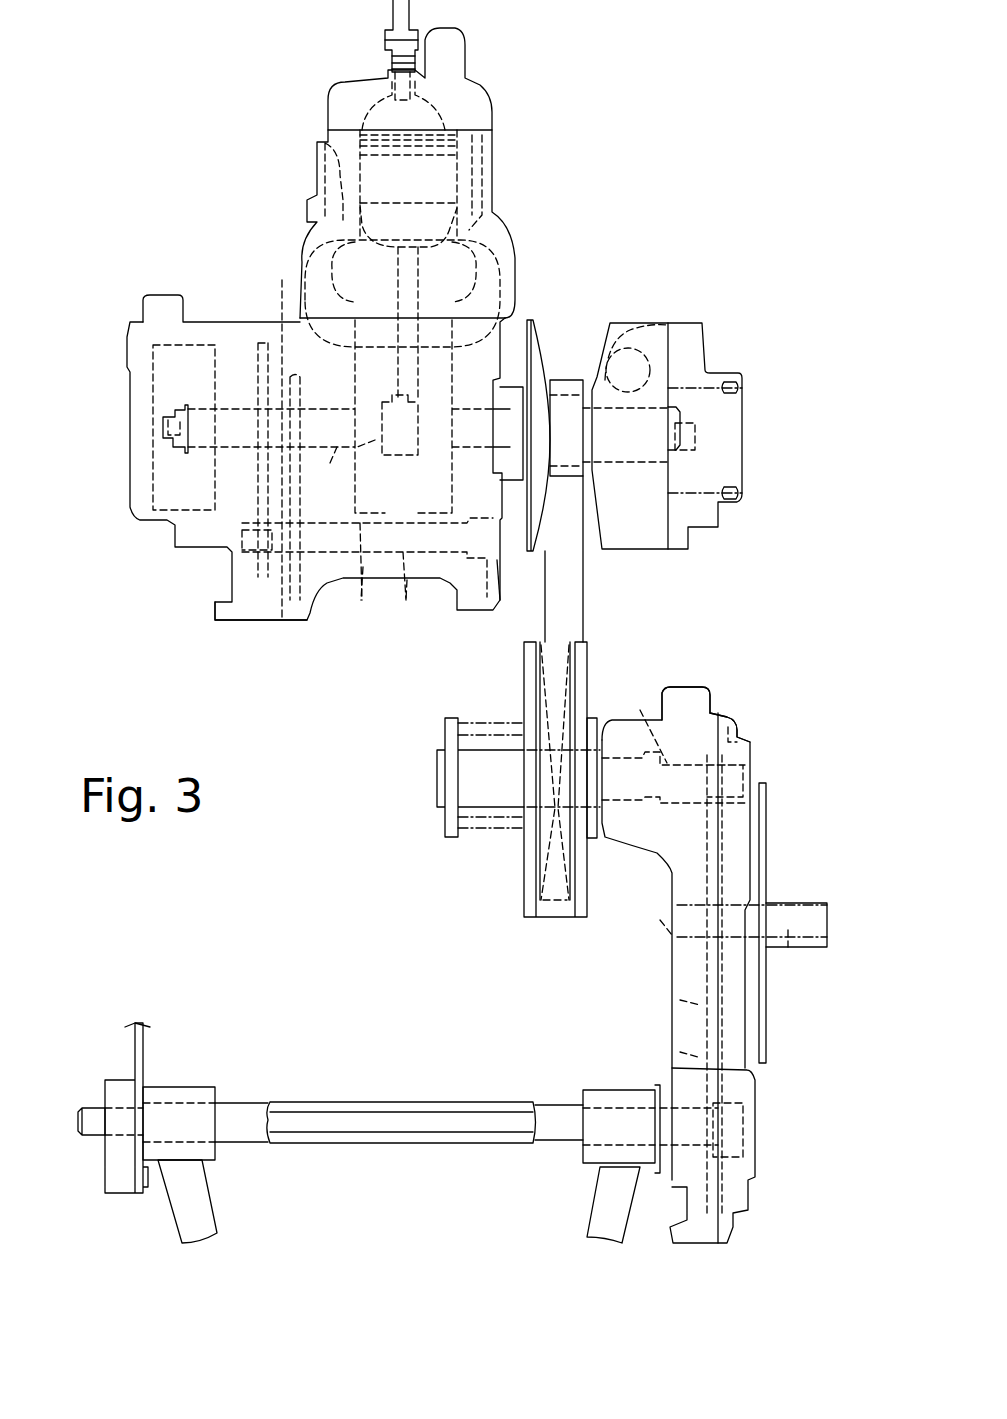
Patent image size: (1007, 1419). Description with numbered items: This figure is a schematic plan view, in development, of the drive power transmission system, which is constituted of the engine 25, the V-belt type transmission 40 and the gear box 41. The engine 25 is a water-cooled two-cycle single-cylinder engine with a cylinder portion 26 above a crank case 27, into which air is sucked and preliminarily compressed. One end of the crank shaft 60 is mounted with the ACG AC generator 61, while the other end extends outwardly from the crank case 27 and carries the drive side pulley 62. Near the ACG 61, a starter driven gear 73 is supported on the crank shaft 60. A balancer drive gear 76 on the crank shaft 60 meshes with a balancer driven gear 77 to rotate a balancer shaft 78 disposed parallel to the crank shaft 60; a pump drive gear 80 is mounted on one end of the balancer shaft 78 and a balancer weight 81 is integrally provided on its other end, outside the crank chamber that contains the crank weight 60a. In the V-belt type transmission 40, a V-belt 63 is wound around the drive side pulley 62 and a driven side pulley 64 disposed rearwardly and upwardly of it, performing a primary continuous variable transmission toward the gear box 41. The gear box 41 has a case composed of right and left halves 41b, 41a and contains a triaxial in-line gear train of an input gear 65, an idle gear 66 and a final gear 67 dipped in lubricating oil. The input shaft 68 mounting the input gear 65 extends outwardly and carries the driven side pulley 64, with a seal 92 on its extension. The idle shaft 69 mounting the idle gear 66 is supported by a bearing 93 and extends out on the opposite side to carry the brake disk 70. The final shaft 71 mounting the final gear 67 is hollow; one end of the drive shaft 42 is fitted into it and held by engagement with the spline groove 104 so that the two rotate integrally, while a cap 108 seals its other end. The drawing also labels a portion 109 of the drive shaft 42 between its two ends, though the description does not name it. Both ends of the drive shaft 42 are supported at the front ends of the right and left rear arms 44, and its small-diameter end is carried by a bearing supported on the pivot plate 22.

The engine 25 is at (242, 177).
The cylinder portion 26 is at (333, 135).
The starter driven gear 73 is at (237, 335).
The crank case 27 is at (263, 327).
The balancer drive gear 76 is at (274, 440).
The drive side pulley 62 is at (540, 340).
The V-belt type transmission 40 is at (652, 275).
The crank shaft 60 is at (332, 463).
The ACG AC generator 61 is at (163, 492).
The crank weight 60a is at (363, 567).
The balancer shaft 78 is at (407, 580).
The pump drive gear 80 is at (262, 600).
The balancer driven gear 77 is at (290, 617).
The balancer weight 81 is at (500, 557).
The V-belt 63 is at (576, 573).
The left half case 41a is at (660, 690).
The input shaft 68 is at (647, 730).
The input gear 65 is at (737, 708).
The right half case 41b is at (753, 740).
The brake disk 70 is at (765, 847).
The bearing 93 is at (797, 900).
The idle shaft 69 is at (660, 920).
The driven side pulley 64 is at (520, 898).
The gear box 41 is at (625, 973).
The seal 92 is at (793, 947).
The idle gear 66 is at (693, 1007).
The final gear 67 is at (680, 1052).
The pivot plate 22 is at (133, 1052).
The spline groove 104 is at (190, 1087).
The drive shaft 42 is at (339, 1083).
The splined shaft 109 is at (403, 1123).
The cap 108 is at (88, 1108).
The rear arm 44 is at (193, 1188).
The final shaft 71 is at (728, 1103).